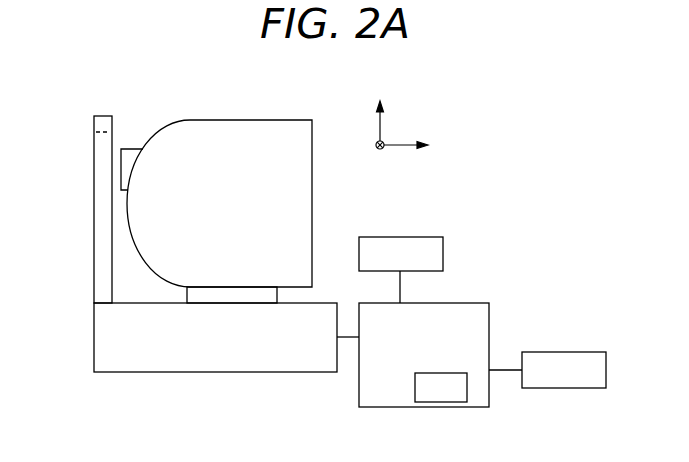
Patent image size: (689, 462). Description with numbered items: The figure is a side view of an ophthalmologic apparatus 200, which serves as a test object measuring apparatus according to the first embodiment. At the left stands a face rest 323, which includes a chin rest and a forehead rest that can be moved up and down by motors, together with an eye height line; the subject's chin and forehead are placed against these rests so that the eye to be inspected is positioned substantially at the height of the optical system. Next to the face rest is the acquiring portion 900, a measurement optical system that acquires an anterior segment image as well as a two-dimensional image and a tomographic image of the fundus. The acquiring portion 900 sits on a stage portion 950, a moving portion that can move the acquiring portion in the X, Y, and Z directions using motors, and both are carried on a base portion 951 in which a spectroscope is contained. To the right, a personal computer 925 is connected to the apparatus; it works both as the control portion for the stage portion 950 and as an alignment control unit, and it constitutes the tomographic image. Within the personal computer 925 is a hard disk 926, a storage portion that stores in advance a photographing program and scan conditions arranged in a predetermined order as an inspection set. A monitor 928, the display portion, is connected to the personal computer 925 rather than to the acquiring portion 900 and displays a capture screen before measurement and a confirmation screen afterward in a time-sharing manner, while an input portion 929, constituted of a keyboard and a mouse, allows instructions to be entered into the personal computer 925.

The ophthalmologic apparatus 200 is at (89, 62).
The face rest 323 is at (105, 116).
The acquiring portion 900 is at (216, 203).
The stage portion 950 is at (186, 295).
The base portion 951 is at (141, 373).
The personal computer 925 is at (413, 355).
The hard disk 926 is at (441, 387).
The monitor 928 is at (401, 270).
The input portion 929 is at (547, 370).